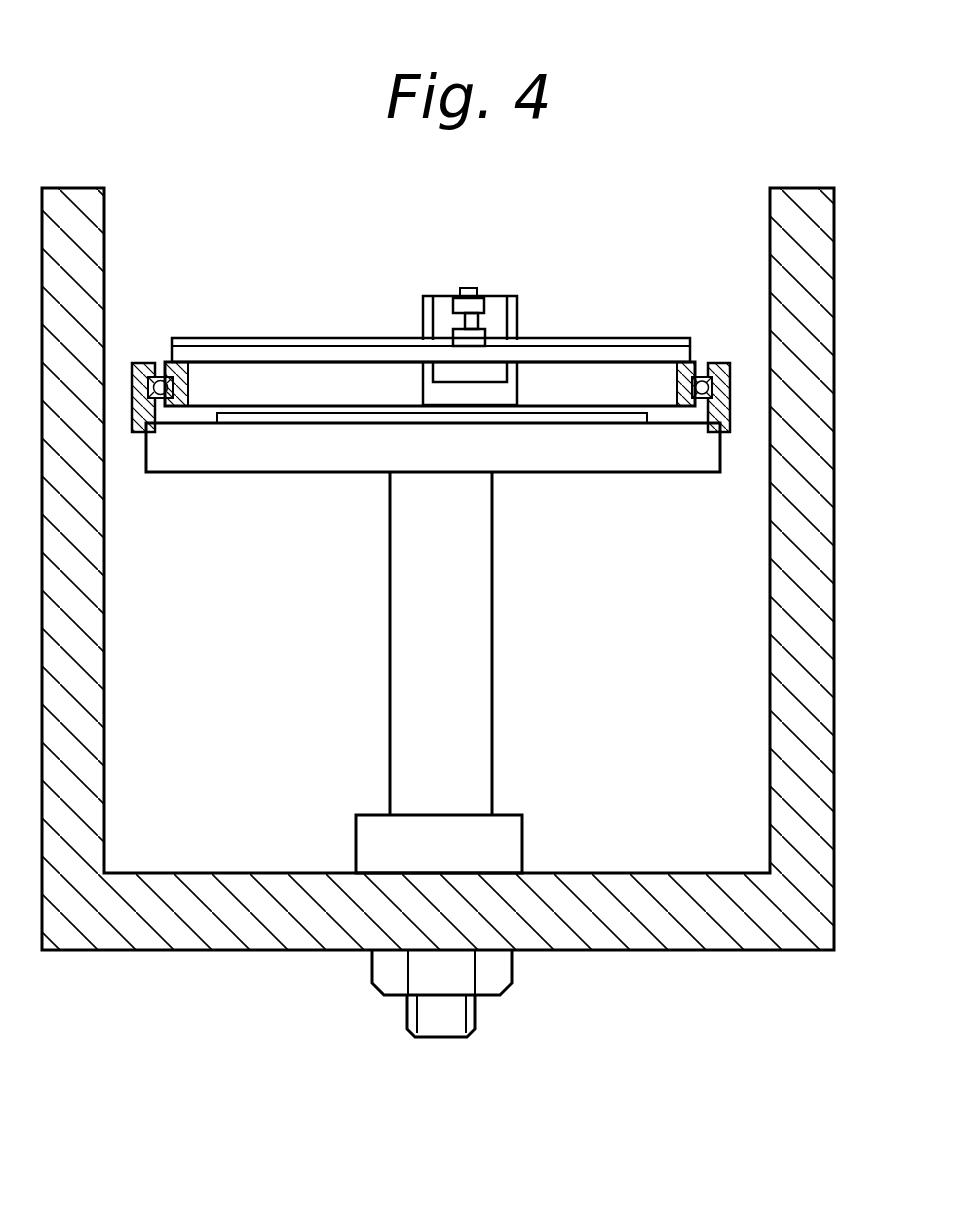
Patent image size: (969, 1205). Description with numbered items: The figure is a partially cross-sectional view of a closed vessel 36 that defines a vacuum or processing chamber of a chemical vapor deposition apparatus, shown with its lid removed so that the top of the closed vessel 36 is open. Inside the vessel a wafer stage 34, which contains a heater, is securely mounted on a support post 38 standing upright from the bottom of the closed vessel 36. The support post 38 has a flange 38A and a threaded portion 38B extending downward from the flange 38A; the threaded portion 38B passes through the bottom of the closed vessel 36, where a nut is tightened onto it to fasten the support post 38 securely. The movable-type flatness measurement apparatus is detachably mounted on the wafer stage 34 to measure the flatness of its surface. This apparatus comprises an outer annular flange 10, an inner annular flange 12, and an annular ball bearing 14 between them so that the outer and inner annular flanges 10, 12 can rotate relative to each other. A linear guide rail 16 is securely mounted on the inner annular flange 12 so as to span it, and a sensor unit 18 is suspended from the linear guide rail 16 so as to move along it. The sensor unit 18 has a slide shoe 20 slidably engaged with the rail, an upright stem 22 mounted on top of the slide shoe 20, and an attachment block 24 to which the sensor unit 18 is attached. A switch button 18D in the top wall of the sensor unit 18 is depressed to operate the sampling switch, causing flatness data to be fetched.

The outer annular flange 10 is at (716, 356).
The inner annular flange 12 is at (204, 384).
The annular ball bearing 14 is at (126, 387).
The linear guide rail 16 is at (256, 326).
The sensor unit 18 is at (530, 304).
The switch button 18D is at (469, 288).
The slide shoe 20 is at (468, 346).
The upright stem 22 is at (470, 318).
The attachment block 24 is at (456, 303).
The wafer stage 34 is at (280, 457).
The closed vessel 36 is at (848, 530).
The support post 38 is at (510, 630).
The flange 38A is at (518, 848).
The threaded portion 38B is at (478, 1010).